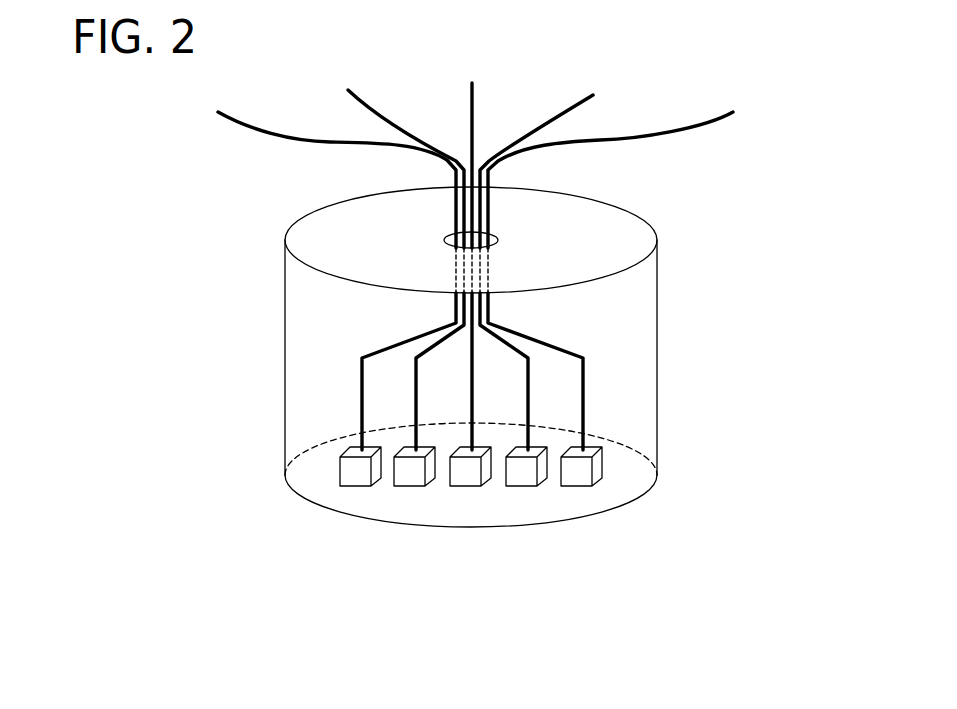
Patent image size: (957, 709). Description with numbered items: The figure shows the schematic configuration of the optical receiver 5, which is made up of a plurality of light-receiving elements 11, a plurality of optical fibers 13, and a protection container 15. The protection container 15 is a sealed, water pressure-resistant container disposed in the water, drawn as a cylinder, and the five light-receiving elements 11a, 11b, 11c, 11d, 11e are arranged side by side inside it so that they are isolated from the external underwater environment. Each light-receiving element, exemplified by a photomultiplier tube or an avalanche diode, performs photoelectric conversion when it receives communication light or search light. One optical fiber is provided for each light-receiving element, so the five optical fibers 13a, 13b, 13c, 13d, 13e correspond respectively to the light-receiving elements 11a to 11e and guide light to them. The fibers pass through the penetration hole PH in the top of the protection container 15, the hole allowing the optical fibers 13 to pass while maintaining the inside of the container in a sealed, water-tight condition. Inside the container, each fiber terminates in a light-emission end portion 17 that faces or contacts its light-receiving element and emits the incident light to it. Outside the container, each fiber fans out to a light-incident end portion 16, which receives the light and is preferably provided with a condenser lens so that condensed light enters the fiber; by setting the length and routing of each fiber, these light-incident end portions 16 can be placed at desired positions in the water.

The optical receiver 5 is at (803, 116).
The light-receiving elements 11 is at (468, 538).
The light-receiving element 11a is at (355, 478).
The light-receiving element 11b is at (415, 478).
The light-receiving element 11c is at (470, 478).
The light-receiving element 11d is at (525, 478).
The light-receiving element 11e is at (581, 511).
The optical fibers 13 is at (467, 266).
The optical fiber 13a is at (348, 140).
The optical fiber 13b is at (416, 386).
The optical fiber 13c is at (470, 362).
The optical fiber 13d is at (495, 157).
The optical fiber 13e is at (558, 347).
The protection container 15 is at (285, 327).
The light-incident end portion 16 is at (223, 113).
The light-emission end portion 17 is at (322, 444).
The penetration hole PH is at (500, 243).